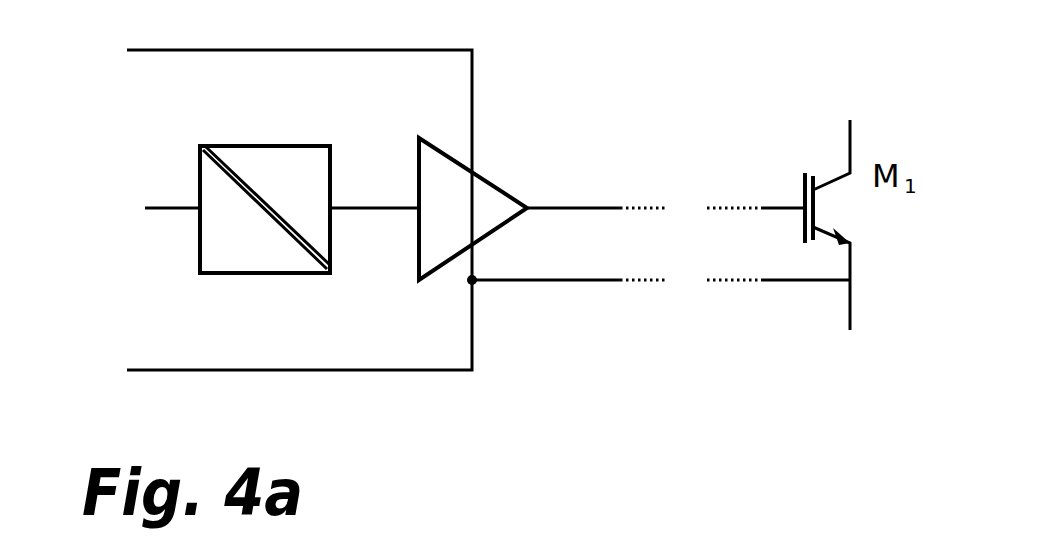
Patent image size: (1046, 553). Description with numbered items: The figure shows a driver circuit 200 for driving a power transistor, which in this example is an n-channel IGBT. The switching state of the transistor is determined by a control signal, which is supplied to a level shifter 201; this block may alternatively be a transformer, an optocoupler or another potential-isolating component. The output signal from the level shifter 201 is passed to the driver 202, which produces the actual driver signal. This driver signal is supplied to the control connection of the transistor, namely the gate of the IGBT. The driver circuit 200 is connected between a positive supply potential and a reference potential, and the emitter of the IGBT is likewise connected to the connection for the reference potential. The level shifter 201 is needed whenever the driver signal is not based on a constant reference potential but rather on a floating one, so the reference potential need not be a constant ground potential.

The driver circuit 200 is at (403, 223).
The level shifter 201 is at (280, 145).
The driver 202 is at (480, 177).